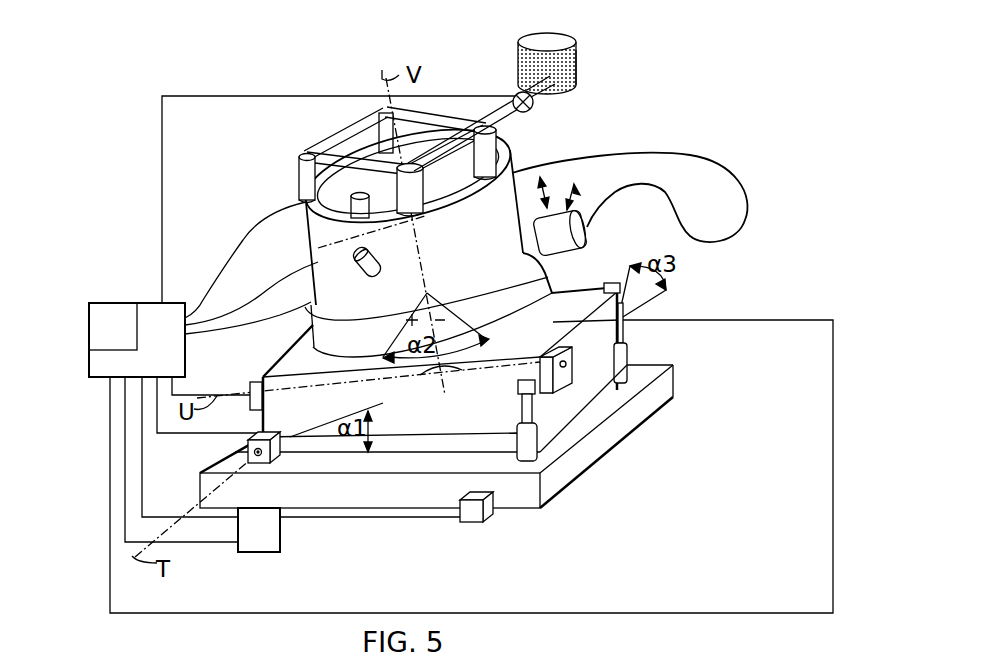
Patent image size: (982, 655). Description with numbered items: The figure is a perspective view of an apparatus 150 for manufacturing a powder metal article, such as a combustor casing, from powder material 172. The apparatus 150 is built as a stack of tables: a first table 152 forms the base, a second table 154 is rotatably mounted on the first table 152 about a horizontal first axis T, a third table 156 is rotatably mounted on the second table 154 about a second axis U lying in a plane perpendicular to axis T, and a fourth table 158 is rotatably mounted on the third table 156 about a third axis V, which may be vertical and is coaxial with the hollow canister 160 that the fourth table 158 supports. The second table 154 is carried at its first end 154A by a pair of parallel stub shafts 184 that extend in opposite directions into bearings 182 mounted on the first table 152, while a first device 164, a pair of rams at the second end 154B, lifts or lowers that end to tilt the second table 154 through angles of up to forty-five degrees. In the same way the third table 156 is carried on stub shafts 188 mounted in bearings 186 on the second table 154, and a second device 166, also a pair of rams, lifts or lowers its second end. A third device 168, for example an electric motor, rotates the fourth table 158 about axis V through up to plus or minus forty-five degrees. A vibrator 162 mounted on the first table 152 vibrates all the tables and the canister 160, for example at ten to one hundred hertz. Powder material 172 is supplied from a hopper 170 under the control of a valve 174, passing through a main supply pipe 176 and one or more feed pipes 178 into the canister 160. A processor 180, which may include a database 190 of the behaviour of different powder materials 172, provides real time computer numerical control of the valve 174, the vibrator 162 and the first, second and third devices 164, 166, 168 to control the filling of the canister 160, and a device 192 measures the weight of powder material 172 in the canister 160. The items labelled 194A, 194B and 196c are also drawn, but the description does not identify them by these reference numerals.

The apparatus 150 is at (601, 142).
The first table 152 is at (583, 463).
The second table 154 is at (600, 397).
The first end of the second table 154A is at (253, 424).
The second end of the second table 154B is at (622, 316).
The third table 156 is at (573, 365).
The fourth table 158 is at (327, 340).
The hollow canister 160 is at (480, 260).
The vibrator 162 is at (484, 521).
The first device 164 is at (540, 450).
The second device 166 is at (553, 322).
The third device 168 is at (443, 373).
The hopper 170 is at (544, 57).
The powder material 172 is at (578, 66).
The valve 174 is at (535, 101).
The main supply pipe 176 is at (515, 114).
The feed pipes 178 is at (300, 178).
The processor 180 is at (426, 354).
The bearings 182 is at (248, 446).
The stub shafts 184 is at (232, 470).
The bearings 186 is at (628, 372).
The stub shafts 188 is at (588, 395).
The database 190 is at (100, 333).
The device to measure weight 192 is at (258, 543).
The first cable sensor 194A is at (306, 203).
The second cable sensor 194B is at (355, 266).
The cable sensor 196c is at (590, 243).